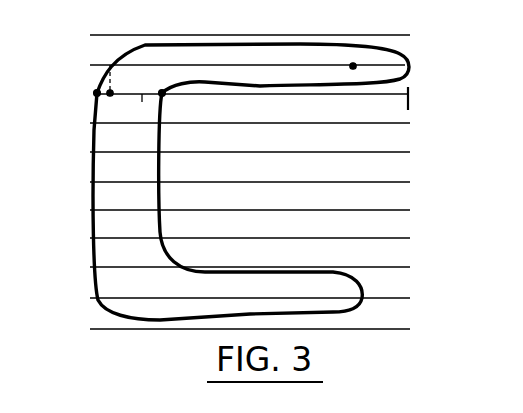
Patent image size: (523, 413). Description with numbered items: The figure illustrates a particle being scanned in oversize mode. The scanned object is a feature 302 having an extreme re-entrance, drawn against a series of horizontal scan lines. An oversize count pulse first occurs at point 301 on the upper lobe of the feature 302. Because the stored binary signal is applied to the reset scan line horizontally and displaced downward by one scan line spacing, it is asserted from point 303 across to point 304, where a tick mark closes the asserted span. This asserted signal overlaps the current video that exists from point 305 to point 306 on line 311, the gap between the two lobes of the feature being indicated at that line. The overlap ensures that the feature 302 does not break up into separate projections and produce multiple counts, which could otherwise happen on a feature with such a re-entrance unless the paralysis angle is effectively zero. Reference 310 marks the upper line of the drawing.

The point 301 is at (353, 63).
The feature 302 is at (160, 170).
The point 303 is at (111, 92).
The point 304 is at (410, 98).
The point 305 is at (93, 93).
The point 306 is at (163, 96).
The top line 310 is at (94, 65).
The line 311 is at (142, 102).